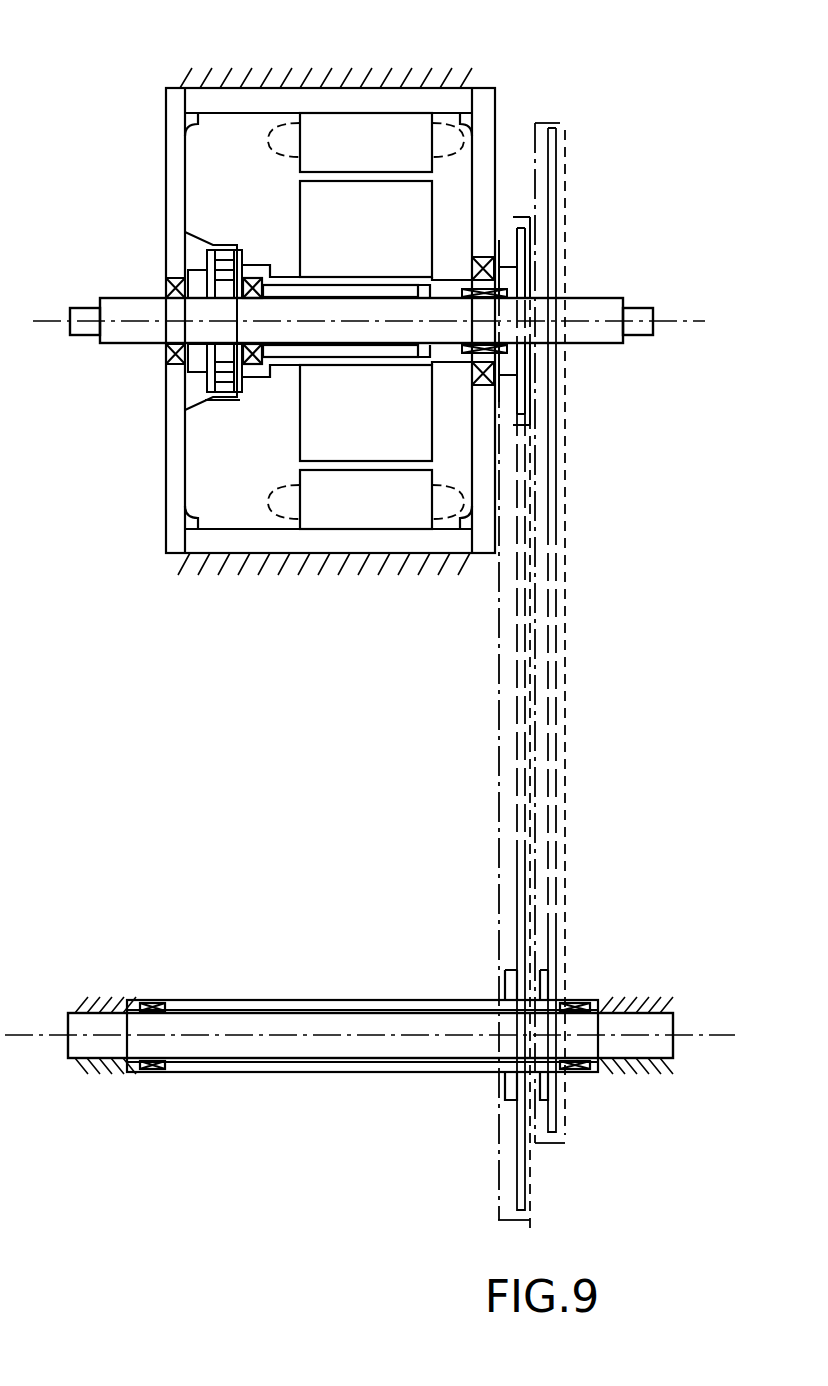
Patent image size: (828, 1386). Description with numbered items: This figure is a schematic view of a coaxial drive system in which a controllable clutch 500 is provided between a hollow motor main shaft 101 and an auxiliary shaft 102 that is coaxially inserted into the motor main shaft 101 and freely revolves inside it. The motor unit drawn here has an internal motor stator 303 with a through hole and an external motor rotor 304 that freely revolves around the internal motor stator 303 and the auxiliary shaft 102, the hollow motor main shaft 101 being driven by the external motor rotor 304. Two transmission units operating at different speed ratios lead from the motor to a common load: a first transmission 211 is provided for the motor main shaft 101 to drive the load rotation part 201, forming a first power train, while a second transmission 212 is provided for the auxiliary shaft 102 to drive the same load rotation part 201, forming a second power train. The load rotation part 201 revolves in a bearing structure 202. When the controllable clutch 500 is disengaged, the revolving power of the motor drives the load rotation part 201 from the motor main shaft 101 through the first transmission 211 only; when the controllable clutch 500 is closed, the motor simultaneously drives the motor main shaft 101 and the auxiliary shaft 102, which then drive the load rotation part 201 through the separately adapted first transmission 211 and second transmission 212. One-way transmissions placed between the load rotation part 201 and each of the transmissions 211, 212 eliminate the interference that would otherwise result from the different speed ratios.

The external motor rotor 304 is at (368, 140).
The internal motor stator 303 is at (390, 225).
The controllable clutch 500 is at (228, 246).
The motor main shaft 101 is at (518, 290).
The auxiliary shaft 102 is at (578, 318).
The first transmission 211 is at (497, 805).
The second transmission 212 is at (566, 725).
The load rotation part 201 is at (355, 1000).
The bearing structure 202 is at (182, 1030).